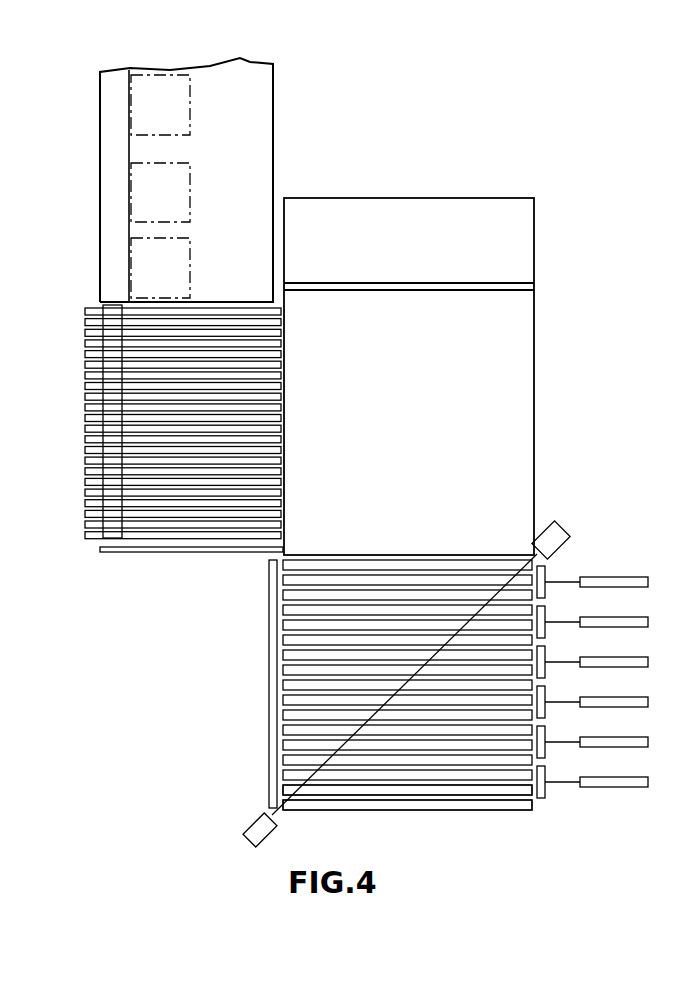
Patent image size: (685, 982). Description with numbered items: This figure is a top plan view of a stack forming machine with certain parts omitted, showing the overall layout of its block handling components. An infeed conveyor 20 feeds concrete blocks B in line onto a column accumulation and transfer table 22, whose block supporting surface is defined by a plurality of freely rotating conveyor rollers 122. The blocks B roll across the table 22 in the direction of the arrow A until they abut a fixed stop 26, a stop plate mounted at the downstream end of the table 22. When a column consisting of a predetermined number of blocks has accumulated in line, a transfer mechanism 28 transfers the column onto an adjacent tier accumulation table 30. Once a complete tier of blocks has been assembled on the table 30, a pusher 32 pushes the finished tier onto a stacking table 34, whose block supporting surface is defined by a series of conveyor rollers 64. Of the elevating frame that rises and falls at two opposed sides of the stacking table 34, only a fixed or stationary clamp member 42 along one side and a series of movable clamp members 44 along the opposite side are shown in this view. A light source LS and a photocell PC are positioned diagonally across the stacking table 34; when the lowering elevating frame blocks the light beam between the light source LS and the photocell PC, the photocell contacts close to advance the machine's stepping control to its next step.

The infeed conveyor 20 is at (246, 140).
The arrow A is at (222, 207).
The concrete blocks B is at (174, 131).
The conveyor rollers 122 is at (247, 322).
The column accumulation and transfer table 22 is at (173, 532).
The transfer mechanism 28 is at (110, 520).
The fixed stop 26 is at (220, 552).
The tier accumulation table 30 is at (434, 415).
The pusher 32 is at (447, 295).
The fixed clamp member 42 is at (269, 686).
The stacking table 34 is at (410, 772).
The conveyor rollers 64 is at (453, 777).
The movable clamp members 44 is at (626, 800).
The photocell PC is at (565, 545).
The light source LS is at (248, 820).